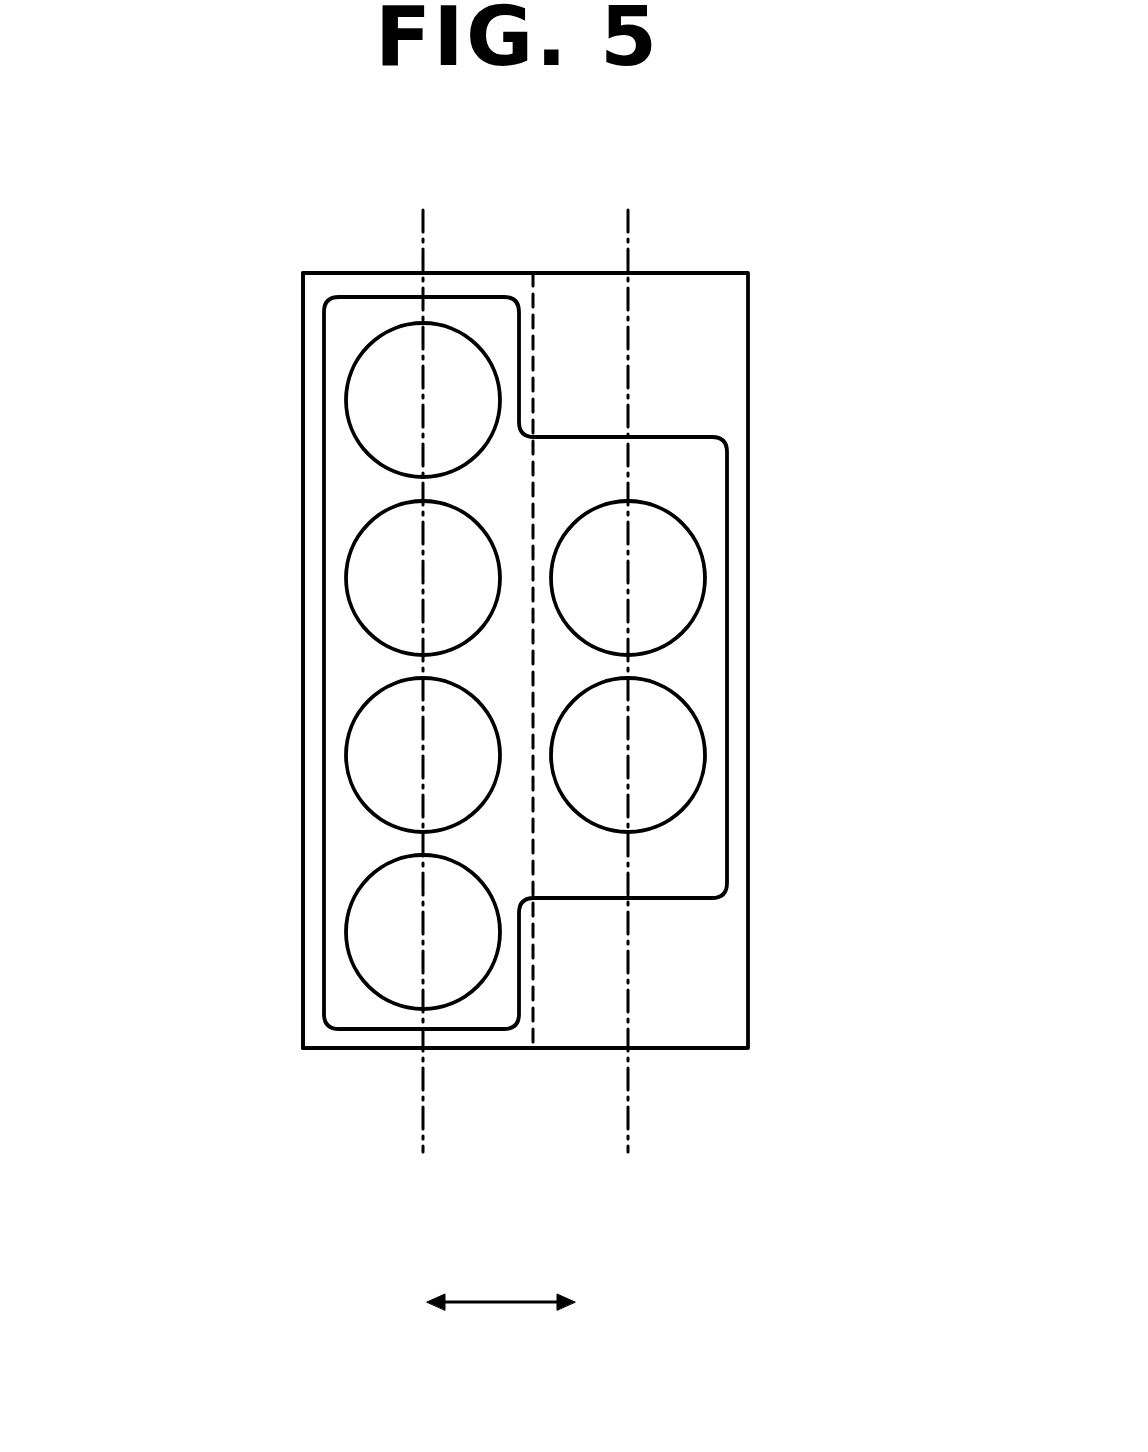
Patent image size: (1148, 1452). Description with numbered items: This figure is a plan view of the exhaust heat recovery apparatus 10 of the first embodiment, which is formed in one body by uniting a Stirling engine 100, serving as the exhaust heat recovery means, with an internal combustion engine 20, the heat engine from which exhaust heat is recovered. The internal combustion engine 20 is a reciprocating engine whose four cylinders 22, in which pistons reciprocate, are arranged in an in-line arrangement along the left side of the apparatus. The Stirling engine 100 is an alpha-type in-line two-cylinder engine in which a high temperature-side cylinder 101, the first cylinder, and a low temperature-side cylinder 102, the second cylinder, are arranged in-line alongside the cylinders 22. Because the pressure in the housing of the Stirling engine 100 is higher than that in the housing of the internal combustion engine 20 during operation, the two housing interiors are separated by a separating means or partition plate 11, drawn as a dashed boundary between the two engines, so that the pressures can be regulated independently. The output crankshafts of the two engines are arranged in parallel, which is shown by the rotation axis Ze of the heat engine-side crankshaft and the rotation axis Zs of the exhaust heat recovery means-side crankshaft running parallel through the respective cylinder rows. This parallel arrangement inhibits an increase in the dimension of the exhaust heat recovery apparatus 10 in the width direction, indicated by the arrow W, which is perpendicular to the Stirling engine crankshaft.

The exhaust heat recovery apparatus 10 is at (830, 202).
The separating means (partition plate) 11 is at (535, 1003).
The internal combustion engine 20 is at (312, 297).
The cylinders 22 is at (347, 400).
The Stirling engine 100 is at (718, 587).
The high temperature-side cylinder 101 is at (704, 768).
The low temperature-side cylinder 102 is at (682, 521).
The rotation axis of the heat engine-side crankshaft Ze is at (423, 213).
The rotation axis of the exhaust heat recovery means-side crankshaft Zs is at (628, 213).
The width direction W is at (501, 1322).